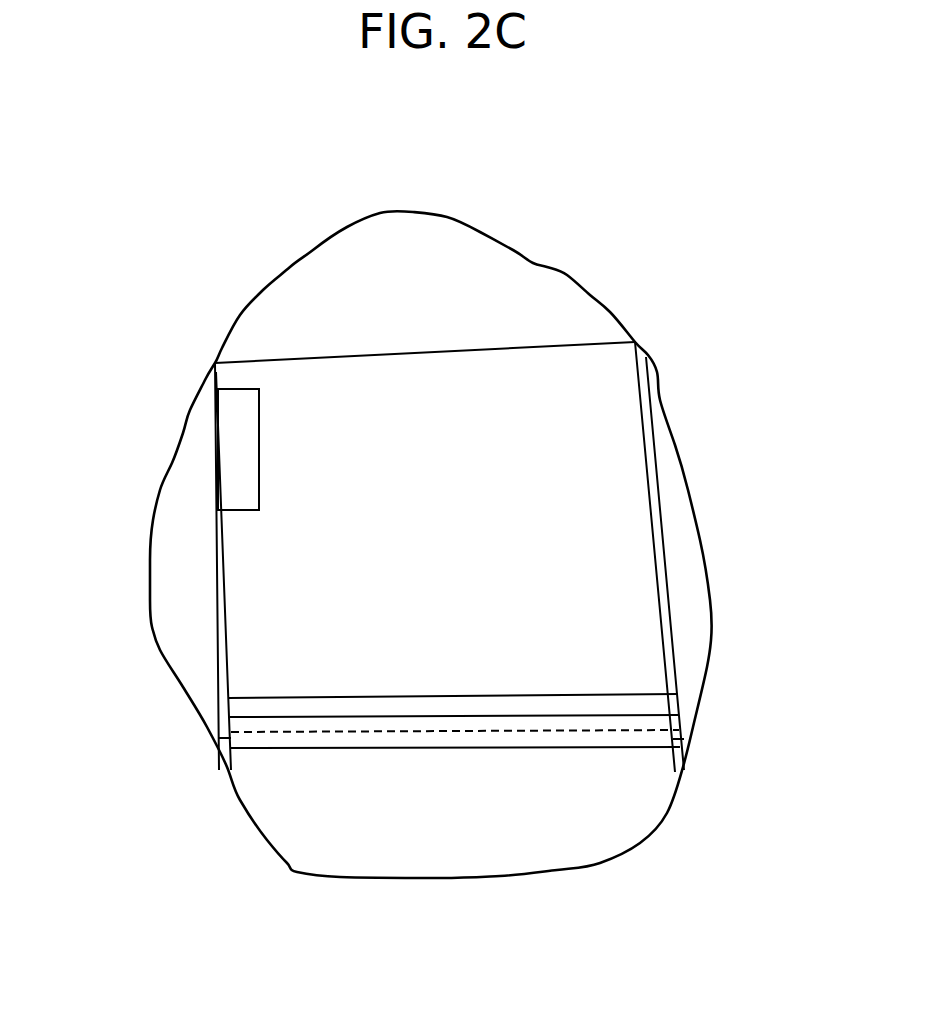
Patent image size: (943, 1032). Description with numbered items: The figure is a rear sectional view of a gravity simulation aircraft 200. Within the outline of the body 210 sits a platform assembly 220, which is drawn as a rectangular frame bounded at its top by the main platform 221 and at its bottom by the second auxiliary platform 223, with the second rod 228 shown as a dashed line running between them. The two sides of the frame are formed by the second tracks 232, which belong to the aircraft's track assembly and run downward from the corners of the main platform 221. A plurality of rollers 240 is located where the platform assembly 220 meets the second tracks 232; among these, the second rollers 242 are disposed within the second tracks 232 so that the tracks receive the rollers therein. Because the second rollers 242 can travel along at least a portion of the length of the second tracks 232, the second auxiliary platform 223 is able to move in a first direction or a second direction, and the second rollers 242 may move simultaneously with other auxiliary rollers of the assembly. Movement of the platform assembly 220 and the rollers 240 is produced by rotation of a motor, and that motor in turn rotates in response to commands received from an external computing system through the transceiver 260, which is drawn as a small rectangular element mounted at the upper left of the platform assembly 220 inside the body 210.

The gravity simulation aircraft 200 is at (183, 247).
The body 210 is at (608, 287).
The platform assembly 220 is at (445, 585).
The main platform 221 is at (577, 693).
The second auxiliary platform 223 is at (292, 748).
The second rod 228 is at (518, 732).
The second tracks 232 is at (215, 547).
The rollers 240 is at (211, 718).
The second rollers 242 is at (225, 738).
The transceiver 260 is at (238, 388).